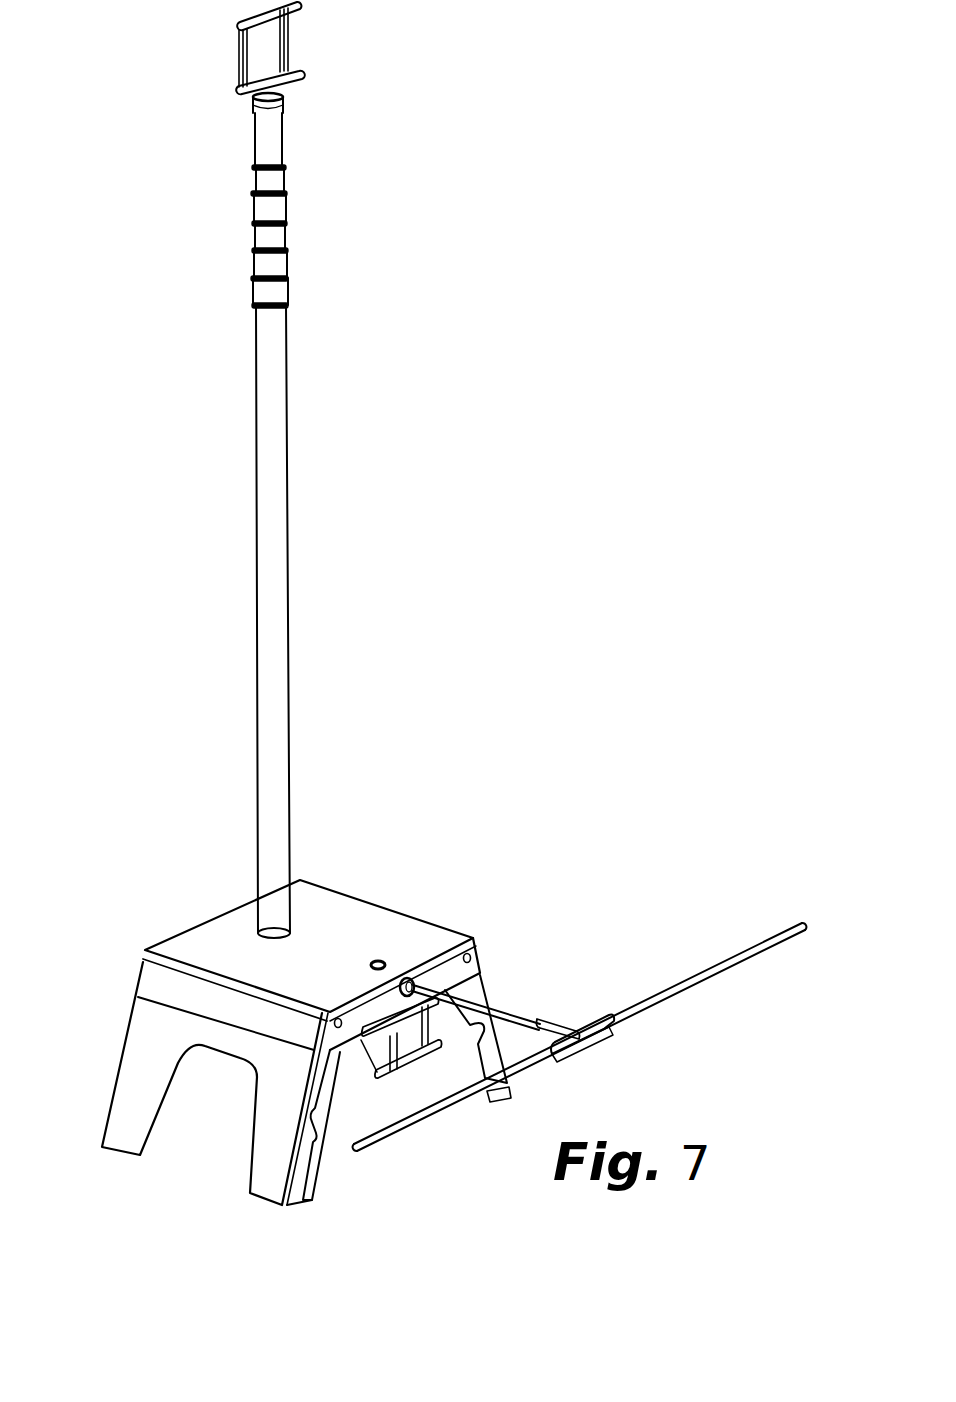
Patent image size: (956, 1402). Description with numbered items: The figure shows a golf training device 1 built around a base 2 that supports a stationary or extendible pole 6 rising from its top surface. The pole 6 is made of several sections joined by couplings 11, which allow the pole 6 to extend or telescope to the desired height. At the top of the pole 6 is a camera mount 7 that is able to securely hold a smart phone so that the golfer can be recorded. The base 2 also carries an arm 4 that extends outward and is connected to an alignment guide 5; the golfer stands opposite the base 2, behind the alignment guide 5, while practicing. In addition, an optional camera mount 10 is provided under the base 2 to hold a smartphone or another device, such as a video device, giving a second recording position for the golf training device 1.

The golf training device 1 is at (208, 460).
The base 2 is at (210, 937).
The arm 4 is at (517, 1003).
The alignment guide 5 is at (663, 990).
The pole 6 is at (272, 136).
The camera mount 7 is at (302, 78).
The camera mount 10 is at (360, 1067).
The couplings 11 is at (255, 283).